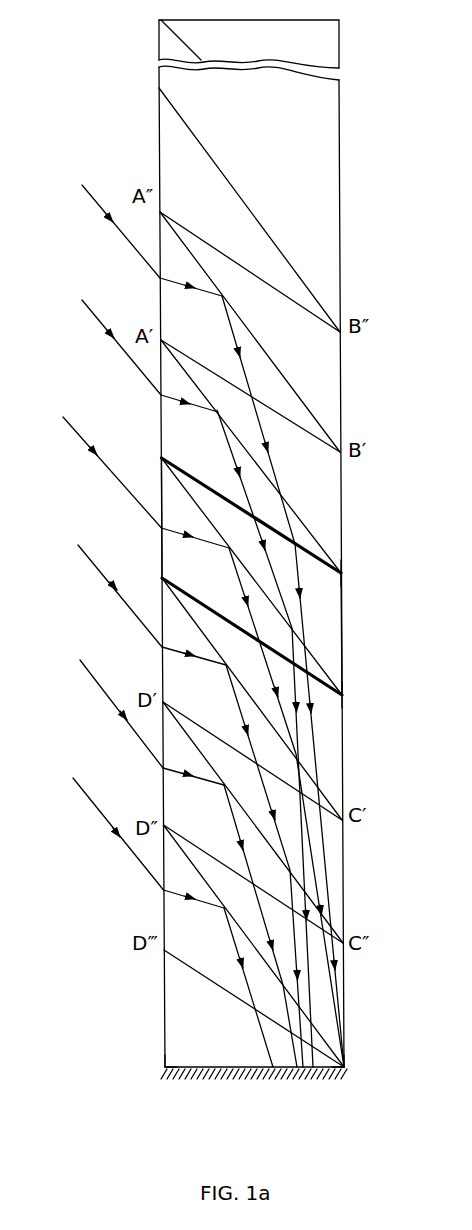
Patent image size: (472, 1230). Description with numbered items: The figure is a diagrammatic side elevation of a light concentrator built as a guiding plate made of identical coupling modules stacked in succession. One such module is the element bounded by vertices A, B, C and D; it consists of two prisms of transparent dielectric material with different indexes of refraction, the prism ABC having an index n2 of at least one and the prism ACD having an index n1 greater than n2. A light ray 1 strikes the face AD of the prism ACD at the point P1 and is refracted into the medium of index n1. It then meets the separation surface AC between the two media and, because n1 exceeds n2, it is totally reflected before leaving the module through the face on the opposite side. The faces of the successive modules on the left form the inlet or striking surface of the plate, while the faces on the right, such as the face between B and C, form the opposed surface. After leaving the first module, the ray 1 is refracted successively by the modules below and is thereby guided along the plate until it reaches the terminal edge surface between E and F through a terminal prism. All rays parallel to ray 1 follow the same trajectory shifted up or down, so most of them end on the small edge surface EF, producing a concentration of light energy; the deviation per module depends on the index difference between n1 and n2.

The light ray 1 is at (98, 463).
The index of refraction of prism ACD n1 is at (193, 563).
The index of refraction of prism ABC n2 is at (313, 608).
The striking point on face AD P1 is at (182, 539).
The vertex A of coupling module A is at (239, 508).
The vertex B of coupling module B is at (351, 573).
The vertex C of coupling module C is at (352, 697).
The vertex D of coupling module D is at (239, 631).
The end point E of terminal edge surface E is at (157, 1065).
The end point F of terminal edge surface F is at (347, 1065).